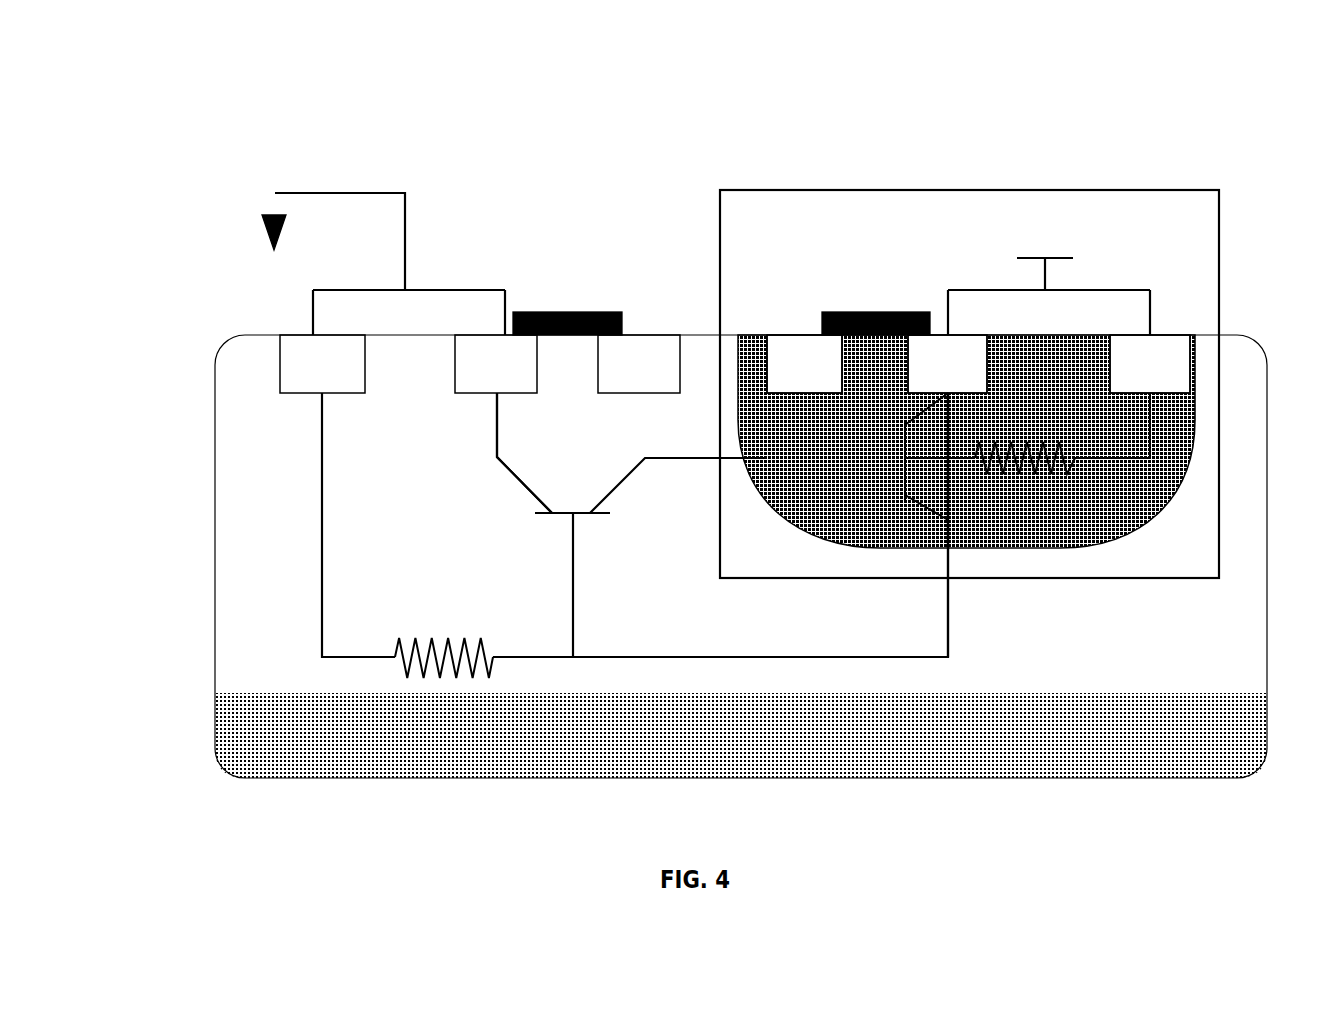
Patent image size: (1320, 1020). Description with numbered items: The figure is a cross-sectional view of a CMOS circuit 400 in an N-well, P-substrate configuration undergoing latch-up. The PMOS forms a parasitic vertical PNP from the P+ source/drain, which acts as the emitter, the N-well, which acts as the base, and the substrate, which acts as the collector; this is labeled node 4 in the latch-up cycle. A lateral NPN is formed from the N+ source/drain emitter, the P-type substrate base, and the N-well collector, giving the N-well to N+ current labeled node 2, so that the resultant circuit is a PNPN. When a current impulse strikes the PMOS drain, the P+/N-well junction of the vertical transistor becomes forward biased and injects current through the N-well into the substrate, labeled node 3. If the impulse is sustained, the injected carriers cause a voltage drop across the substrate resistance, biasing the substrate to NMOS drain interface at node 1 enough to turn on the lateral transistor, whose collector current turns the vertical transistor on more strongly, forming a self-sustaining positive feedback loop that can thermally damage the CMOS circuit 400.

The CMOS circuit 400 is at (223, 105).
The node 1 (substrate to NMOS drain bias) 1 is at (590, 558).
The node 2 (N-well to N+ current) 2 is at (535, 430).
The node 3 (current injected through N-well into substrate) 3 is at (792, 468).
The node 4 (parasitic vertical PNP) 4 is at (958, 425).